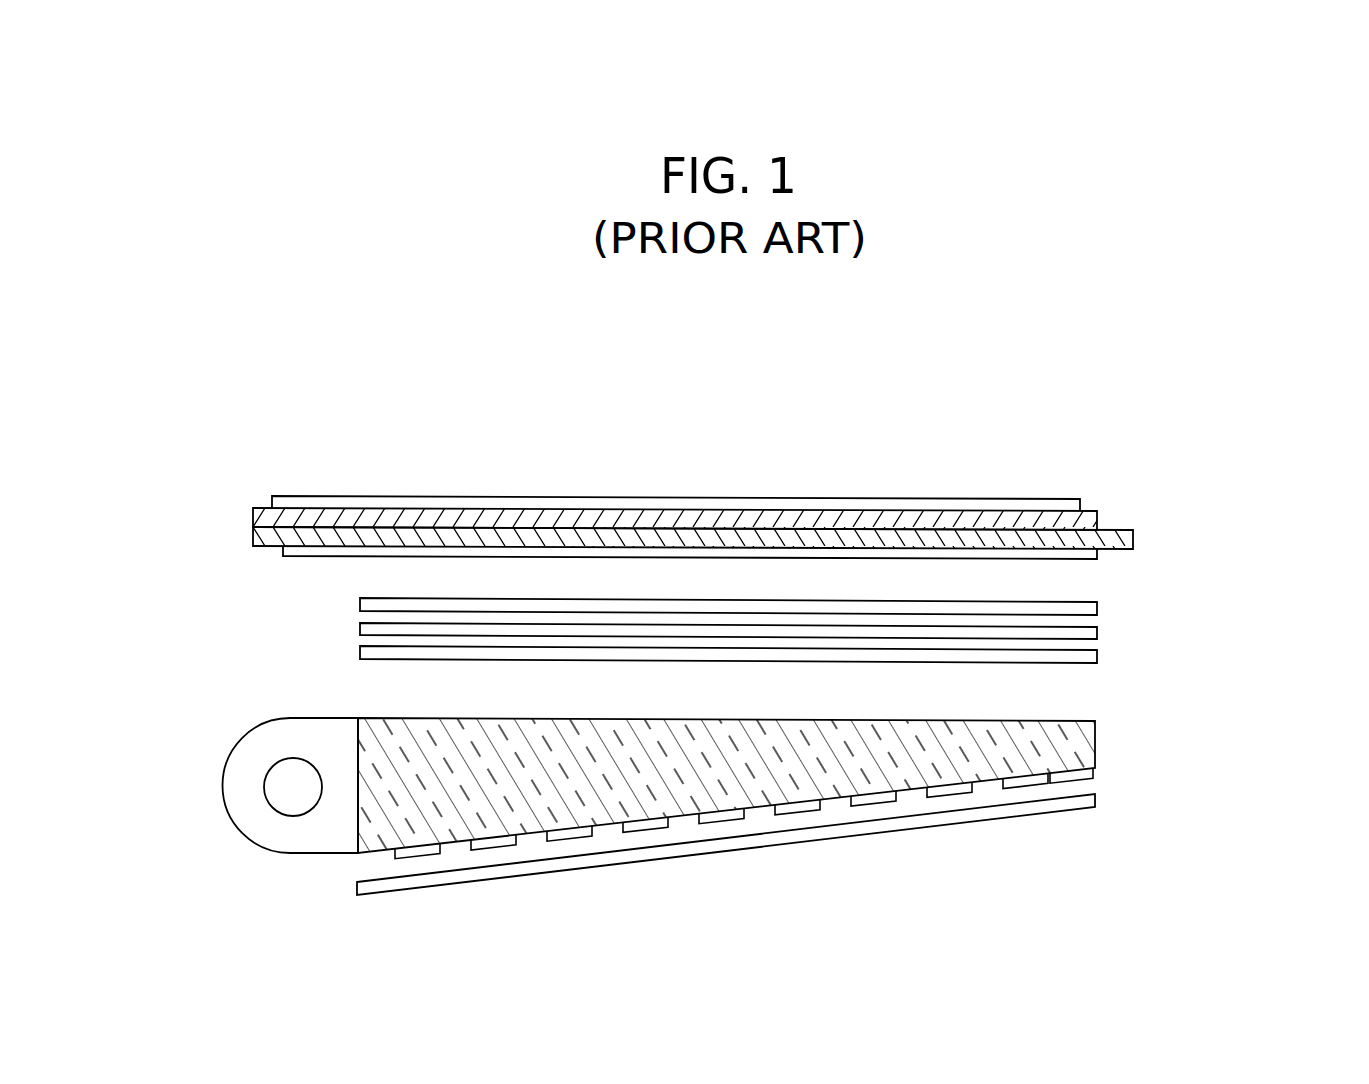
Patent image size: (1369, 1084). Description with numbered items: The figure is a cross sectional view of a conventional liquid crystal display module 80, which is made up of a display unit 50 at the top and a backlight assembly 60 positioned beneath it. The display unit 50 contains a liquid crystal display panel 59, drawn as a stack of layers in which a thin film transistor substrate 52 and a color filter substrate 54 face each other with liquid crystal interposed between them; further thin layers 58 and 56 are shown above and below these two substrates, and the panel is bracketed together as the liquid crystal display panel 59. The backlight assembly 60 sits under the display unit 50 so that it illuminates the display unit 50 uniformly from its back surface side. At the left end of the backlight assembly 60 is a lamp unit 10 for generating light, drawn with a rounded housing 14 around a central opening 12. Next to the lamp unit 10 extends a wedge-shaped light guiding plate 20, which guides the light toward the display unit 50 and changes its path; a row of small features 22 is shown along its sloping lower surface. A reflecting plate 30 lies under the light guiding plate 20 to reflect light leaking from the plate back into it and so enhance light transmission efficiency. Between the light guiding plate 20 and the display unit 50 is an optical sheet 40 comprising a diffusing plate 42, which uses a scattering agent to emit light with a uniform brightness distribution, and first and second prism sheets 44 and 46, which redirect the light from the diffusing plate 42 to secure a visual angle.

The lamp unit 10 is at (152, 695).
The hole 12 is at (278, 771).
The housing body 14 is at (257, 846).
The light guiding plate 20 is at (1095, 724).
The pattern electrodes / dots 22 is at (1052, 784).
The reflecting plate 30 is at (1047, 801).
The optical sheet 40 is at (1197, 560).
The diffusing plate 42 is at (1097, 655).
The first prism sheet 44 is at (1097, 631).
The second prism sheet 46 is at (1097, 607).
The display unit 50 is at (322, 470).
The thin film transistor substrate 52 is at (253, 545).
The color filter substrate 54 is at (253, 520).
The lower polarizer 56 is at (283, 553).
The upper polarizer 58 is at (272, 503).
The liquid crystal display panel 59 is at (157, 445).
The backlight assembly 60 is at (1263, 560).
The liquid crystal display module 80 is at (1105, 432).